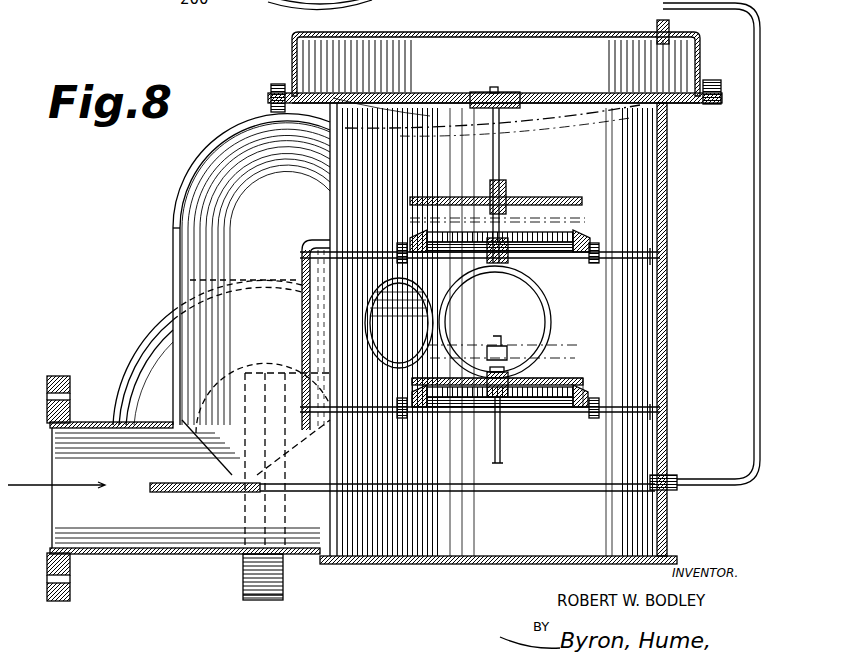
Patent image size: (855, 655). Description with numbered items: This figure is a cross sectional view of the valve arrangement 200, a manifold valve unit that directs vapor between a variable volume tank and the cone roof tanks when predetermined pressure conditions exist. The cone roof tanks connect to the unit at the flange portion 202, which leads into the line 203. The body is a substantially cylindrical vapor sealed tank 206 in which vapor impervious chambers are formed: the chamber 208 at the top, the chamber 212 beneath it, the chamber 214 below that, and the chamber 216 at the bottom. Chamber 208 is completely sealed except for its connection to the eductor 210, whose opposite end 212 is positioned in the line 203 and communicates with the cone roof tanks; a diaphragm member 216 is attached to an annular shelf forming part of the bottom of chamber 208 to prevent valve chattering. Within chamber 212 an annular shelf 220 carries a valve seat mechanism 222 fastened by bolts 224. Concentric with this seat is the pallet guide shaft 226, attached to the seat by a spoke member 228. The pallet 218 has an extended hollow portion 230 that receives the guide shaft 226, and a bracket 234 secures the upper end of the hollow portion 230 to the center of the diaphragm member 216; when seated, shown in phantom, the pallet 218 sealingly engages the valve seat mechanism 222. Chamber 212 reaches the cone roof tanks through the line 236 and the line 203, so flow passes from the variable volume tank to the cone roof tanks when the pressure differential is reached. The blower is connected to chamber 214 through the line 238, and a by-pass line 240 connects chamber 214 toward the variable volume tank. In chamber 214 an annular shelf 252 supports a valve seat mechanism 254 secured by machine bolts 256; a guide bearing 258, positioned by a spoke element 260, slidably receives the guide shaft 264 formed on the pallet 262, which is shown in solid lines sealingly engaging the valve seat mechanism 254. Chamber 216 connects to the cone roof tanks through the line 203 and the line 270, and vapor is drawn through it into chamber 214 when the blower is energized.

The valve arrangement 200 is at (673, 208).
The flange portion 202 is at (60, 376).
The line 203 is at (91, 420).
The vapor sealed tank 206 is at (666, 150).
The chamber 208 is at (517, 42).
The eductor 210 is at (714, 487).
The chamber 212 is at (643, 174).
The chamber 214 is at (651, 312).
The diaphragm member 216 is at (574, 96).
The pallet 218 is at (543, 186).
The annular shelf 220 is at (644, 255).
The valve seat mechanism 222 is at (594, 236).
The bolts 224 is at (405, 261).
The pallet guide shaft 226 is at (500, 166).
The spoke member 228 is at (535, 247).
The extended hollow portion 230 is at (490, 143).
The bracket 234 is at (514, 92).
The line 236 is at (222, 160).
The line 238 is at (553, 312).
The by-pass line 240 is at (158, 318).
The annular shelf 252 is at (644, 410).
The valve seat mechanism 254 is at (595, 386).
The machine bolts 256 is at (403, 414).
The guide bearing 258 is at (545, 398).
The spoke element 260 is at (470, 414).
The pallet 262 is at (578, 359).
The guide shaft 264 is at (500, 458).
The line 270 is at (303, 554).